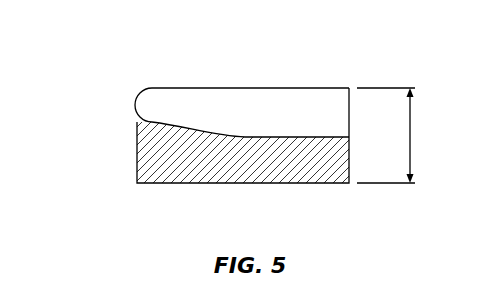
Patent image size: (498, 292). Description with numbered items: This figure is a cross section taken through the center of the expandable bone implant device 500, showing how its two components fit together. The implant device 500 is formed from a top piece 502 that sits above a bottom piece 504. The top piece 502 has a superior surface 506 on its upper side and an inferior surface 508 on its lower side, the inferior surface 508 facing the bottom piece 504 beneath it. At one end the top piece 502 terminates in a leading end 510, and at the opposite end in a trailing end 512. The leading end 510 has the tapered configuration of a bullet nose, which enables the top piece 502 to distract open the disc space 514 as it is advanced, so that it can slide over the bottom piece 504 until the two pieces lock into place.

The implant device 500 is at (102, 158).
The top piece 502 is at (115, 86).
The bottom piece 504 is at (356, 168).
The superior surface 506 is at (273, 88).
The inferior surface 508 is at (265, 138).
The leading end 510 is at (127, 108).
The trailing end 512 is at (351, 113).
The disc space 514 is at (411, 147).